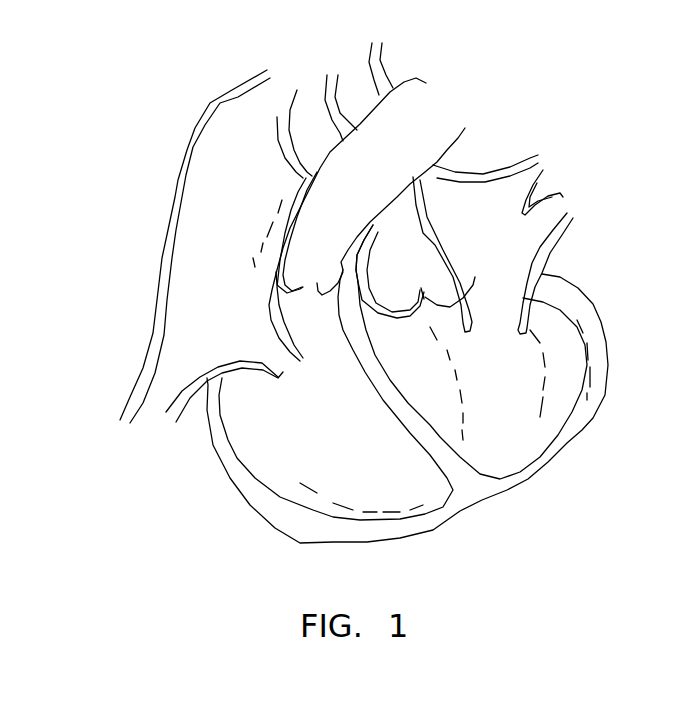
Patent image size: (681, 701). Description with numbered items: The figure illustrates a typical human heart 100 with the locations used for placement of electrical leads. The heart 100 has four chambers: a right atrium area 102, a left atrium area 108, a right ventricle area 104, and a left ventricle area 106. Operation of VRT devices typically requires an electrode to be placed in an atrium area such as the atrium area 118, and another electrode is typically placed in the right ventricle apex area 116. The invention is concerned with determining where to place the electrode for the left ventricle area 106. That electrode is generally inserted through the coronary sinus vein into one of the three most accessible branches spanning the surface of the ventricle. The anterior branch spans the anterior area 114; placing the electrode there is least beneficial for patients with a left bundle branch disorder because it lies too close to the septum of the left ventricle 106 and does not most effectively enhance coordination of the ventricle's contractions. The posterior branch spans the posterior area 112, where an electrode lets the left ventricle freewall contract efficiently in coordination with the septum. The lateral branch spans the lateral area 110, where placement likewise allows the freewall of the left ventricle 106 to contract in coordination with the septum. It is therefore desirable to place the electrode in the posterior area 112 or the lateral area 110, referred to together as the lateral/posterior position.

The heart 100 is at (506, 526).
The right atrium area 102 is at (187, 278).
The right ventricle area 104 is at (253, 452).
The left ventricle area 106 is at (557, 388).
The left atrium area 108 is at (502, 236).
The lateral area 110 is at (586, 337).
The posterior area 112 is at (543, 402).
The anterior area 114 is at (463, 418).
The right ventricle apex area 116 is at (363, 518).
The atrium area 118 is at (252, 253).